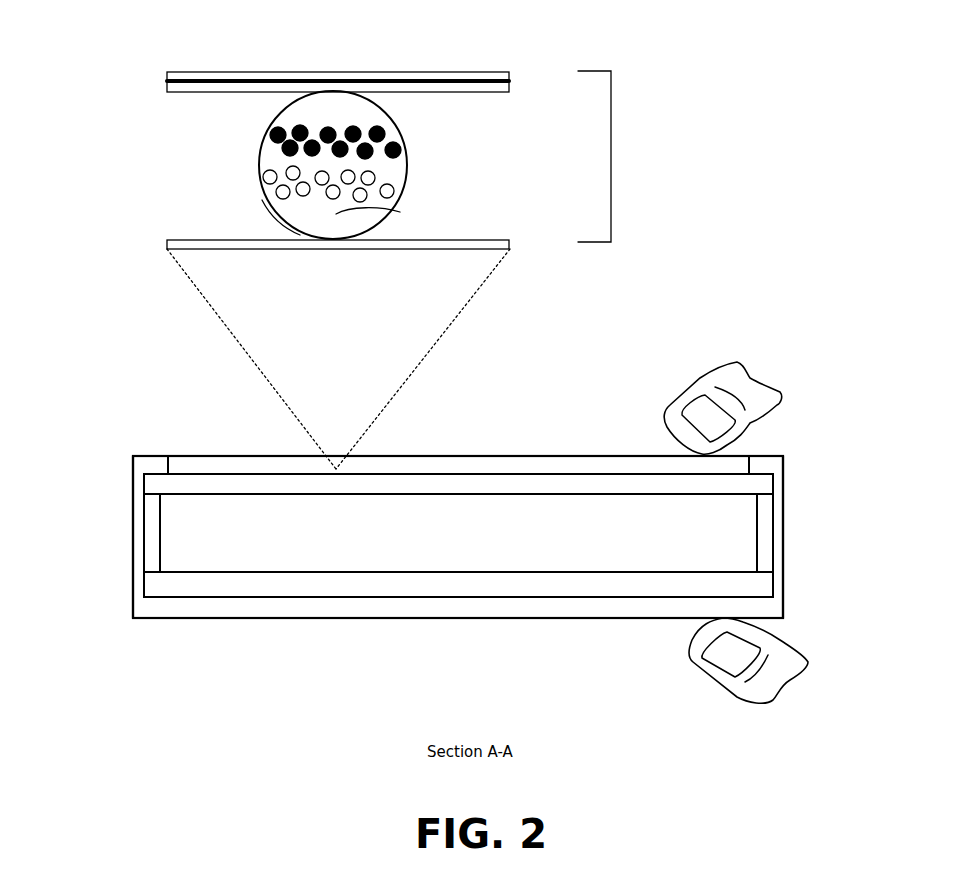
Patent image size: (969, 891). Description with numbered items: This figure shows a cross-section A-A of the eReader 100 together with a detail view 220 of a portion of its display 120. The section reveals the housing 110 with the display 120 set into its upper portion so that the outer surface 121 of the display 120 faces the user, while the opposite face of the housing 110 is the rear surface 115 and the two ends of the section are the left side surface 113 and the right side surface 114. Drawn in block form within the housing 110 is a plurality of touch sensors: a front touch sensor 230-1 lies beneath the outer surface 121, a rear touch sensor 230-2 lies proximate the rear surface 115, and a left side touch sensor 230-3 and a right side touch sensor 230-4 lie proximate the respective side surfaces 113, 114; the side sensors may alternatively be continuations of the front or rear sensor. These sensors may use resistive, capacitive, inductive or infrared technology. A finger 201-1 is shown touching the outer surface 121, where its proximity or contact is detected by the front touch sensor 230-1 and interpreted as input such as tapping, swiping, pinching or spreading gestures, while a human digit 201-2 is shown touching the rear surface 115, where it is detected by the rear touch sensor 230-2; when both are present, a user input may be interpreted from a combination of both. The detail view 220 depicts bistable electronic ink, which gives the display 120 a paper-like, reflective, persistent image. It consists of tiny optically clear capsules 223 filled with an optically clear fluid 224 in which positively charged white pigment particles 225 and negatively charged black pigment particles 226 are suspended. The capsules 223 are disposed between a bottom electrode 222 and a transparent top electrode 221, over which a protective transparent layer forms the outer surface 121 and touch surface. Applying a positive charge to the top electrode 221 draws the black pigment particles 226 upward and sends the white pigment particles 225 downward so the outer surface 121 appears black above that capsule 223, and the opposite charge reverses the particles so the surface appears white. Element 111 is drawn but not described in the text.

The eReader 100 is at (143, 390).
The housing 110 is at (430, 610).
The top surface 111 is at (152, 456).
The left side surface 113 is at (786, 498).
The right side surface 114 is at (131, 499).
The rear surface 115 is at (492, 620).
The display 120 is at (611, 155).
The outer surface 121 is at (475, 72).
The detail view 220 is at (100, 143).
The top electrode 221 is at (473, 92).
The bottom electrode 222 is at (493, 239).
The capsules 223 is at (275, 205).
The optically clear fluid 224 is at (338, 214).
The white pigment particles 225 is at (270, 170).
The black pigment particles 226 is at (397, 158).
The front touch sensor 230-1 is at (497, 488).
The rear touch sensor 230-2 is at (378, 588).
The left side touch sensor 230-3 is at (766, 538).
The right side touch sensor 230-4 is at (149, 536).
The finger 201-1 is at (752, 423).
The human digit 201-2 is at (733, 693).